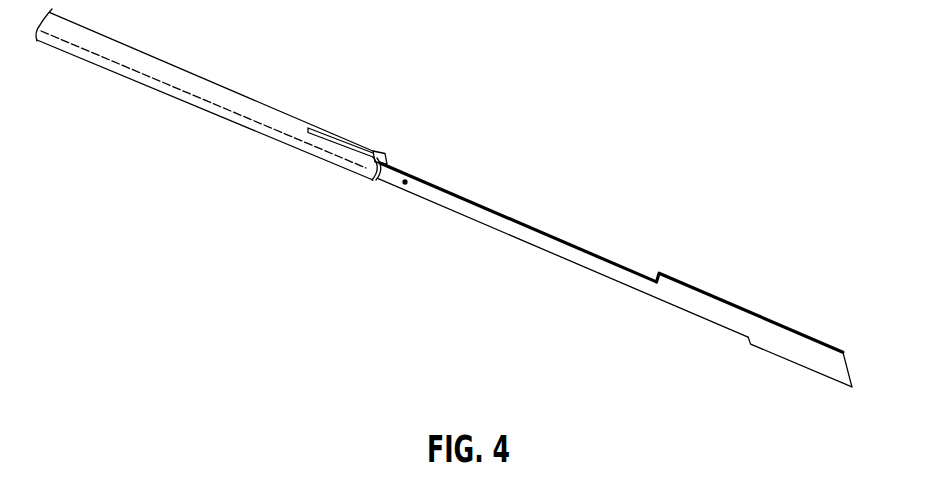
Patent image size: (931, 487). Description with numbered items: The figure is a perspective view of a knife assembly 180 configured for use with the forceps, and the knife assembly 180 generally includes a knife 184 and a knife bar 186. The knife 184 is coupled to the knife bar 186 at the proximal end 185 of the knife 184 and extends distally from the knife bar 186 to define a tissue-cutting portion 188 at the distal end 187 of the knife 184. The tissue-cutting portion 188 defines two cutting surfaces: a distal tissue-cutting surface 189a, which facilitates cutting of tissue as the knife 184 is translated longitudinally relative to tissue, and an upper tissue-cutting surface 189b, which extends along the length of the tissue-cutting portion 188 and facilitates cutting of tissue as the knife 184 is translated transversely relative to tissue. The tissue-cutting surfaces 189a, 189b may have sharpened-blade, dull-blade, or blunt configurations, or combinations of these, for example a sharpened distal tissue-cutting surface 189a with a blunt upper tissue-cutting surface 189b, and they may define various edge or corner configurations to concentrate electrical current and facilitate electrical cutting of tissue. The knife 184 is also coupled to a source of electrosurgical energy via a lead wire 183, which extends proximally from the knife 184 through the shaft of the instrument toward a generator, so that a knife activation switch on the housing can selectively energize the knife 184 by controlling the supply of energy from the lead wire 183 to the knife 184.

The knife assembly 180 is at (532, 150).
The lead wire 183 is at (386, 178).
The knife 184 is at (527, 233).
The proximal end 185 is at (443, 201).
The knife bar 186 is at (182, 75).
The distal end 187 is at (636, 280).
The tissue-cutting portion 188 is at (795, 348).
The distal tissue-cutting surface 189a is at (853, 368).
The upper tissue-cutting surface 189b is at (733, 303).